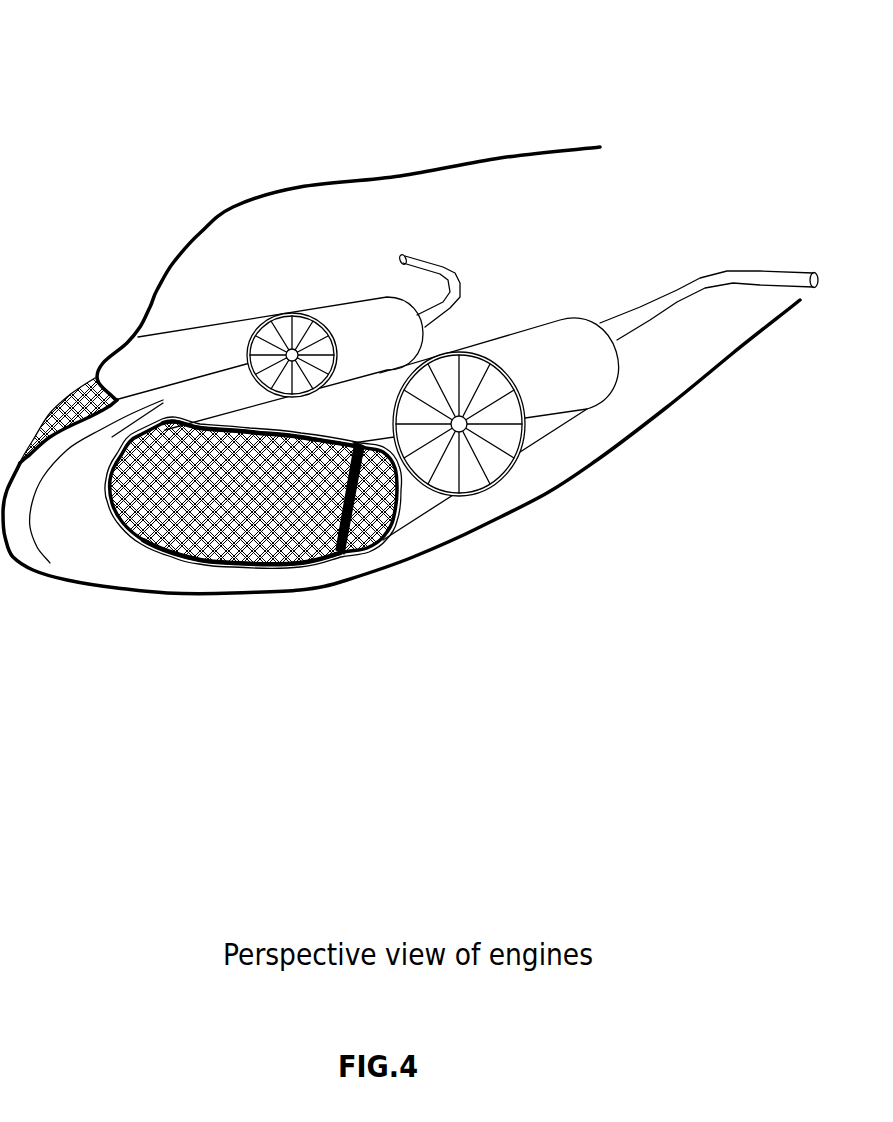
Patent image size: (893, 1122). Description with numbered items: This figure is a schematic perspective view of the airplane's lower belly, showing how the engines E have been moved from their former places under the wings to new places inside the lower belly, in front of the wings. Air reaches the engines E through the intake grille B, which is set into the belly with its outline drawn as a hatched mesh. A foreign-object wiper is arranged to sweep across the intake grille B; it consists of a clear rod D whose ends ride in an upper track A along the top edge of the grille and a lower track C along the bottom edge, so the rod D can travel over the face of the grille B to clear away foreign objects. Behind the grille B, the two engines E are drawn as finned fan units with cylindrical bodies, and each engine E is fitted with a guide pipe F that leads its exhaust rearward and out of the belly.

The upper track A is at (251, 417).
The intake grille B is at (200, 527).
The lower track C is at (228, 574).
The clear rod D is at (367, 537).
The engines E is at (372, 364).
The guide pipes F is at (668, 283).